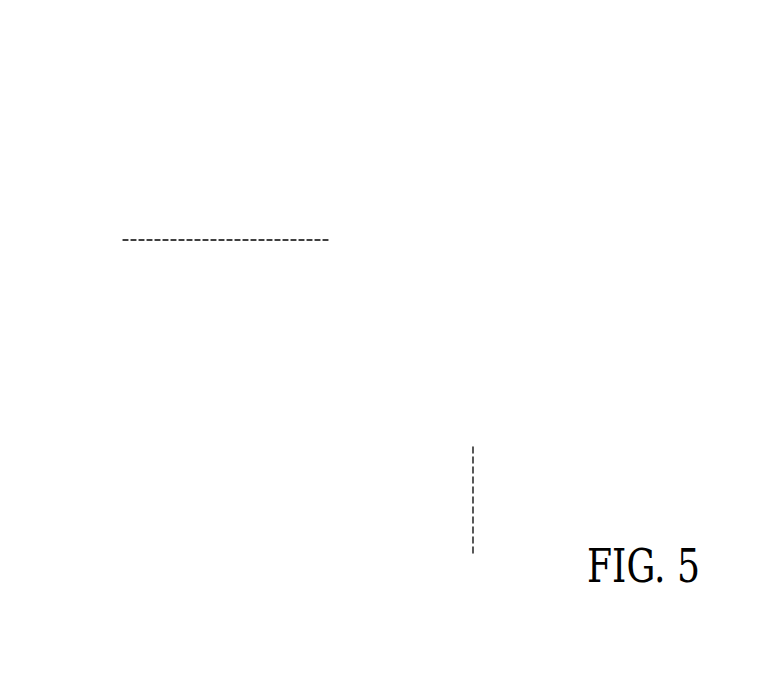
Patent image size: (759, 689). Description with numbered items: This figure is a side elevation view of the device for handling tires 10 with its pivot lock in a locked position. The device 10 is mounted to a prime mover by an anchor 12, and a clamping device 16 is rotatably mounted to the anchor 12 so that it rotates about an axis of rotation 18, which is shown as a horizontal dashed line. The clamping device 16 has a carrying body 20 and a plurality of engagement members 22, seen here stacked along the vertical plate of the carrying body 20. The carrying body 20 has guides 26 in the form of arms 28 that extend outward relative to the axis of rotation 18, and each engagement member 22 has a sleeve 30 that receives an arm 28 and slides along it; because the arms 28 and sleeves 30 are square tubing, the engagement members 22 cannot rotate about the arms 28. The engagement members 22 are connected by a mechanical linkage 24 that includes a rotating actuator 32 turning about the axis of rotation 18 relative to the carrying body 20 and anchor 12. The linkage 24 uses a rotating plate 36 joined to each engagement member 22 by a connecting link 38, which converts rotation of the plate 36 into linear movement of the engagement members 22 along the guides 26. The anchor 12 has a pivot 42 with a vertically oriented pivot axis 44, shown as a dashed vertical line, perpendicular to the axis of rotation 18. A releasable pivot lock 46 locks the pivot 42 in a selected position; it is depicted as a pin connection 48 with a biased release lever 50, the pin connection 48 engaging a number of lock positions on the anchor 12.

The device for handling tires 10 is at (76, 400).
The anchor 12 is at (516, 434).
The clamping device 16 is at (223, 507).
The axis of rotation 18 is at (210, 259).
The carrying body 20 is at (377, 296).
The engagement members 22 is at (220, 295).
The mechanical linkage 24 is at (395, 285).
The guides 26 is at (299, 314).
The arms 28 is at (301, 283).
The sleeves 30 is at (347, 255).
The rotating actuator 32 is at (444, 222).
The rotating plate 36 is at (475, 330).
The connecting link 38 is at (407, 470).
The pivot 42 is at (494, 300).
The pivot axis 44 is at (497, 504).
The pivot lock 46 is at (518, 252).
The pin connection 48 is at (547, 226).
The biased release lever 50 is at (501, 185).